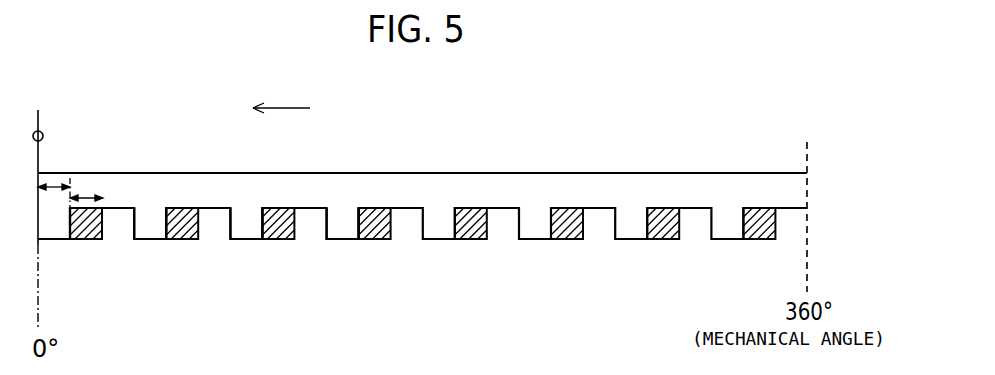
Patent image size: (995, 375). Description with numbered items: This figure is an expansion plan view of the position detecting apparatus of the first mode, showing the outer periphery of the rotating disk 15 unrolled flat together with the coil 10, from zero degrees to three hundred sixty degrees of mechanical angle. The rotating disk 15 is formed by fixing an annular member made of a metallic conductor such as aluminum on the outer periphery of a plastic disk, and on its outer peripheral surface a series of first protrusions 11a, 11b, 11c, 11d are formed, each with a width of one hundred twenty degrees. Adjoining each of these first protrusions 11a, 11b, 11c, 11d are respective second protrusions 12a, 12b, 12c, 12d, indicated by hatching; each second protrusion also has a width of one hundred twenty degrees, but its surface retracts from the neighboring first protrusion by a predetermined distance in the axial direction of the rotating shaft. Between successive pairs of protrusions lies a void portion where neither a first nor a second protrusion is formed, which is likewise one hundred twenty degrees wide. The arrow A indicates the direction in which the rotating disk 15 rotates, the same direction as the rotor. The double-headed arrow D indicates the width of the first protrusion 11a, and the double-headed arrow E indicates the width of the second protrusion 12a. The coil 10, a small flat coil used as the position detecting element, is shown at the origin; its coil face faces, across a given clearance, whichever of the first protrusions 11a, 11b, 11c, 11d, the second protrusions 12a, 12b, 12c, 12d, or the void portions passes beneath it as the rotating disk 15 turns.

The flat coil 10 is at (44, 133).
The rotating disk 15 is at (418, 183).
The first protrusion 11a is at (60, 243).
The first protrusion 11b is at (153, 242).
The first protrusion 11c is at (245, 243).
The first protrusion 11d is at (345, 243).
The second protrusion 12a is at (91, 228).
The second protrusion 12b is at (188, 228).
The second protrusion 12c is at (284, 229).
The second protrusion 12d is at (380, 229).
The arrow A is at (288, 108).
The double-headed arrow D is at (58, 180).
The double-headed arrow E is at (90, 194).